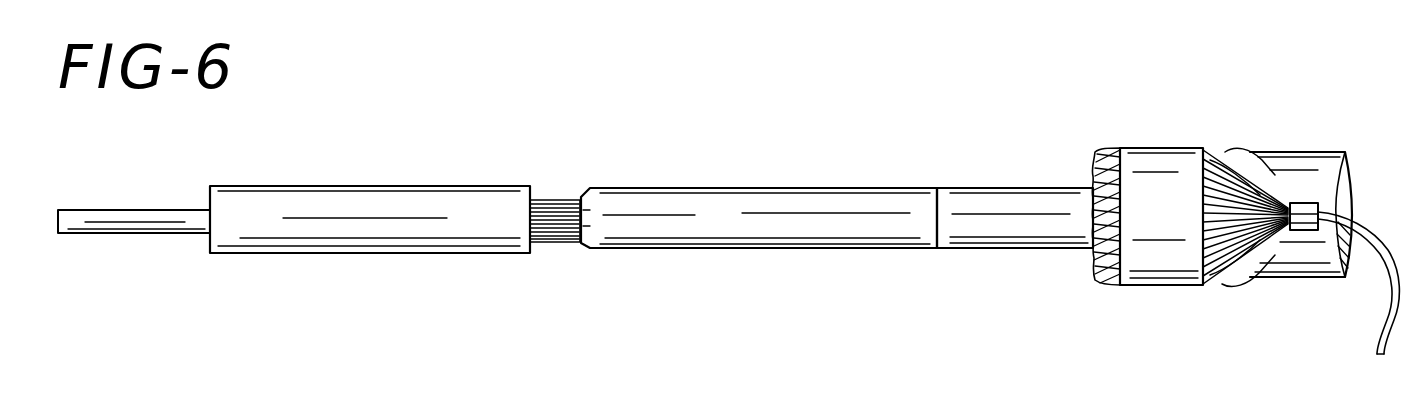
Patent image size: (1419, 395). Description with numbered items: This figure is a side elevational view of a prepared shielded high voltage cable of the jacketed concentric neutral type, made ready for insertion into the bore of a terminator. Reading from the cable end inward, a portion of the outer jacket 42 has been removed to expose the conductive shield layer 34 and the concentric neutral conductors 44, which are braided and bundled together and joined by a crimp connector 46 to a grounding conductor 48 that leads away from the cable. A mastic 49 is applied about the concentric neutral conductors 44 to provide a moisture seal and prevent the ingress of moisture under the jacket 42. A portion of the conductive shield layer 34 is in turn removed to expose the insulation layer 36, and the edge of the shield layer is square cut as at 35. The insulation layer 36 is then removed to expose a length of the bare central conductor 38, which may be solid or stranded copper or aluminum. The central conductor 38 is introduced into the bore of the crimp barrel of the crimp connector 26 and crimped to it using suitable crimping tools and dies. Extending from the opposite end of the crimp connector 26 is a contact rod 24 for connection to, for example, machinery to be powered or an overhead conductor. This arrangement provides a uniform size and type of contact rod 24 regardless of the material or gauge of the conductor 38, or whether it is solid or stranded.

The contact rod 24 is at (130, 212).
The crimp connector 26 is at (346, 196).
The central conductor 38 is at (551, 198).
The insulation layer 36 is at (769, 234).
The square cut edge of shield layer 35 is at (936, 224).
The conductive shield layer 34 is at (968, 199).
The concentric neutral conductors 44 is at (1090, 200).
The mastic 49 is at (1158, 160).
The outer jacket 42 is at (1283, 260).
The crimp connector 46 is at (1300, 212).
The grounding conductor 48 is at (1376, 325).